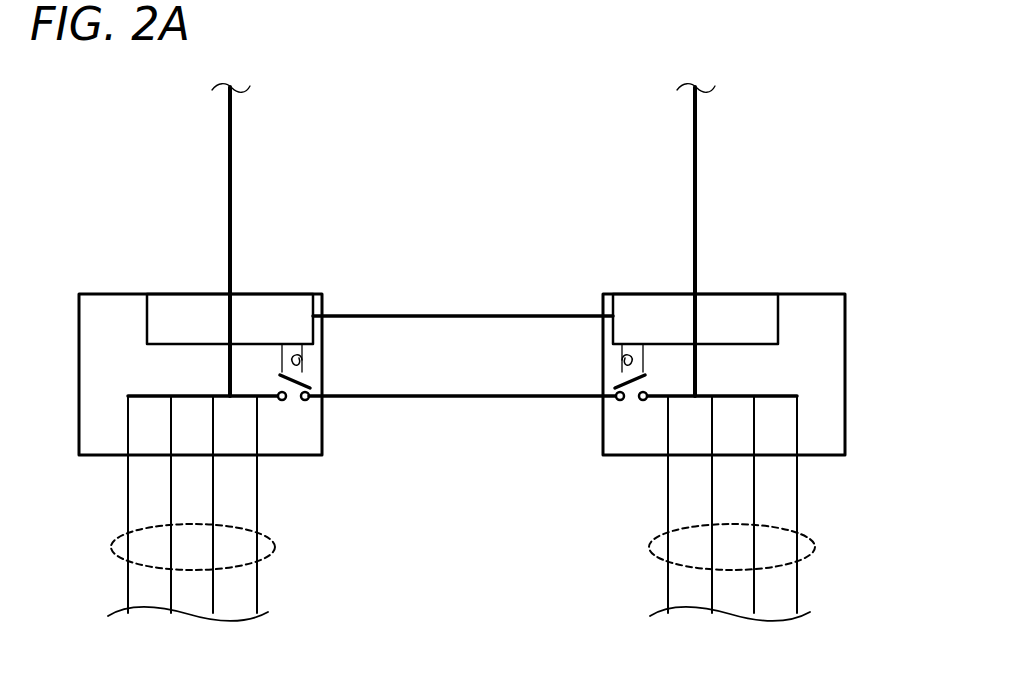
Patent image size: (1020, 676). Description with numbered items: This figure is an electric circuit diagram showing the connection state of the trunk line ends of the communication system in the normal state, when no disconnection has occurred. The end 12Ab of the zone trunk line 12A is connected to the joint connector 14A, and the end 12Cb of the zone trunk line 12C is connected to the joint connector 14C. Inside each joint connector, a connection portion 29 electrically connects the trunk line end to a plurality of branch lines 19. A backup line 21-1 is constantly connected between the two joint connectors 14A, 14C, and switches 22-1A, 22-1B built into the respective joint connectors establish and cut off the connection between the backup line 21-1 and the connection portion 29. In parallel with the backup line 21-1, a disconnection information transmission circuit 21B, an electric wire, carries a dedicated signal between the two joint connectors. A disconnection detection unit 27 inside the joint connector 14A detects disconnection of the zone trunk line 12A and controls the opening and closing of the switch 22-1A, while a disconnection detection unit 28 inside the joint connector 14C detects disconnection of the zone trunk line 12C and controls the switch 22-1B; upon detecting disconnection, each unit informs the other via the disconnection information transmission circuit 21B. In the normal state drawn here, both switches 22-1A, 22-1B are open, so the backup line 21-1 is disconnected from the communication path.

The zone trunk line 12A is at (697, 172).
The end of zone trunk line 12Ab is at (699, 291).
The zone trunk line 12C is at (228, 172).
The end of zone trunk line 12Cb is at (226, 291).
The joint connector 14A is at (810, 293).
The joint connector 14C is at (112, 293).
The branch lines 19 is at (110, 546).
The disconnection information transmission circuit 21B is at (462, 315).
The backup line 21-1 is at (462, 397).
The switch 22-1A is at (631, 406).
The switch 22-1B is at (293, 406).
The disconnection detection unit 27 is at (778, 316).
The disconnection detection unit 28 is at (147, 316).
The connection portion 29 is at (228, 376).